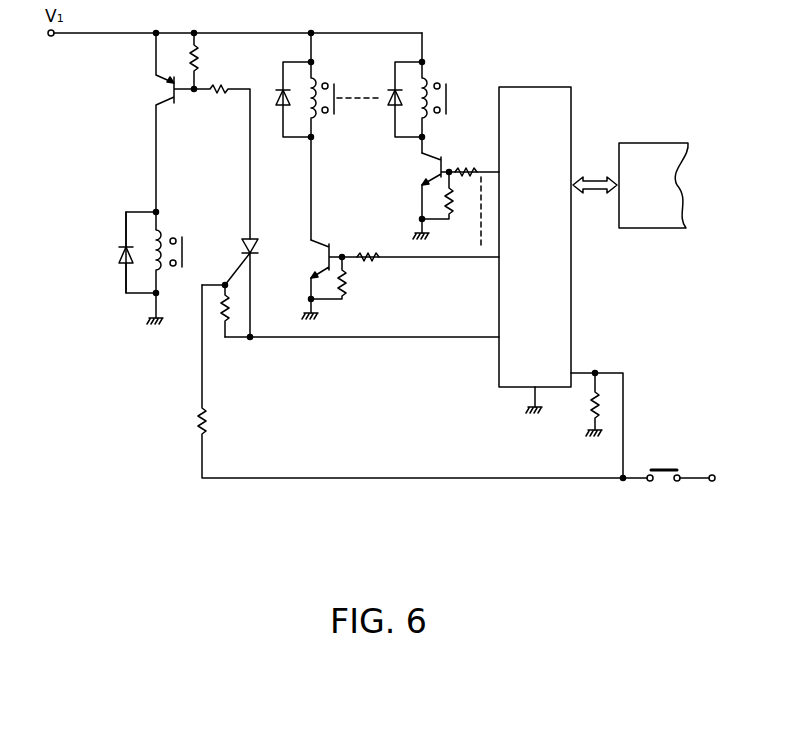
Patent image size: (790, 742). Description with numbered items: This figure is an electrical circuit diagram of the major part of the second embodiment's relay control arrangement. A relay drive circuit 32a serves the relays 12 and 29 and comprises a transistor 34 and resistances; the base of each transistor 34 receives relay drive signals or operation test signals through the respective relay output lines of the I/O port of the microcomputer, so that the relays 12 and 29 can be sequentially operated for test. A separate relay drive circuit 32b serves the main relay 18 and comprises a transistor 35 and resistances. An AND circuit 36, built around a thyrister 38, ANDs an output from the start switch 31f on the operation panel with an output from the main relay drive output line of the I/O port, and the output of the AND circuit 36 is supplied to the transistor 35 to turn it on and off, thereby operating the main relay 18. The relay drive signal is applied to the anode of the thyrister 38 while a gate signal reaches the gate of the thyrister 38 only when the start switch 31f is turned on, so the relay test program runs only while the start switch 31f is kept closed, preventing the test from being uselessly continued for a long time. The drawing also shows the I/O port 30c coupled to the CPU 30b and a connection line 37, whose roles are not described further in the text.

The relay 12 is at (321, 78).
The main relay 18 is at (162, 228).
The relay 29 is at (432, 73).
The CPU 30b is at (658, 143).
The I/O port 30c is at (535, 87).
The start switch 31f is at (660, 483).
The relay drive circuit 32a is at (400, 265).
The relay drive circuit 32b is at (211, 73).
The transistor 34 is at (435, 172).
The transistor 35 is at (165, 88).
The AND circuit 36 is at (195, 375).
The signal line 37 is at (427, 340).
The thyrister 38 is at (257, 243).